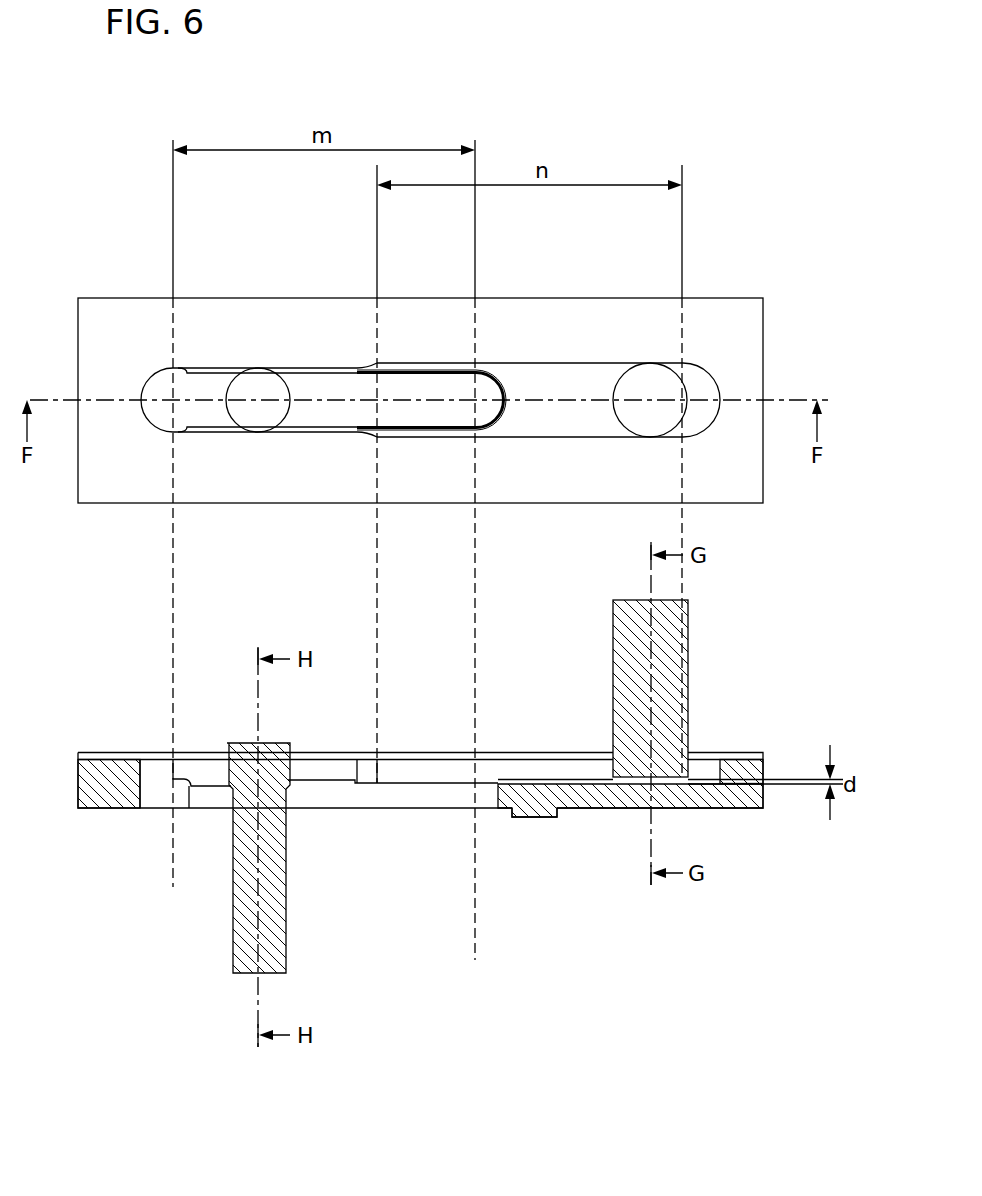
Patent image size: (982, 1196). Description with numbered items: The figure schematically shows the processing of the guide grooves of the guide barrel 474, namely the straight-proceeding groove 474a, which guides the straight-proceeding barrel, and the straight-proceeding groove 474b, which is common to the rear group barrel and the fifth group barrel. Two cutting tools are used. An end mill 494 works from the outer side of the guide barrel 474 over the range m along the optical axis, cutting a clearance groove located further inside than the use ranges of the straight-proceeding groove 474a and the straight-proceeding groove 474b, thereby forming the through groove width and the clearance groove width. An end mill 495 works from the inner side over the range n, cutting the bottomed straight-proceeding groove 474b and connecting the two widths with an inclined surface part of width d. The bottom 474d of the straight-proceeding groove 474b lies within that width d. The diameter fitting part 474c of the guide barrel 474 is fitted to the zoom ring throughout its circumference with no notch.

The guide barrel 474 is at (732, 317).
The straight-proceeding groove 474a is at (227, 373).
The straight-proceeding groove 474b is at (540, 440).
The diameter fitting part 474c is at (527, 817).
The bottom 474d is at (632, 788).
The end mill 494 is at (257, 380).
The end mill 495 is at (632, 378).